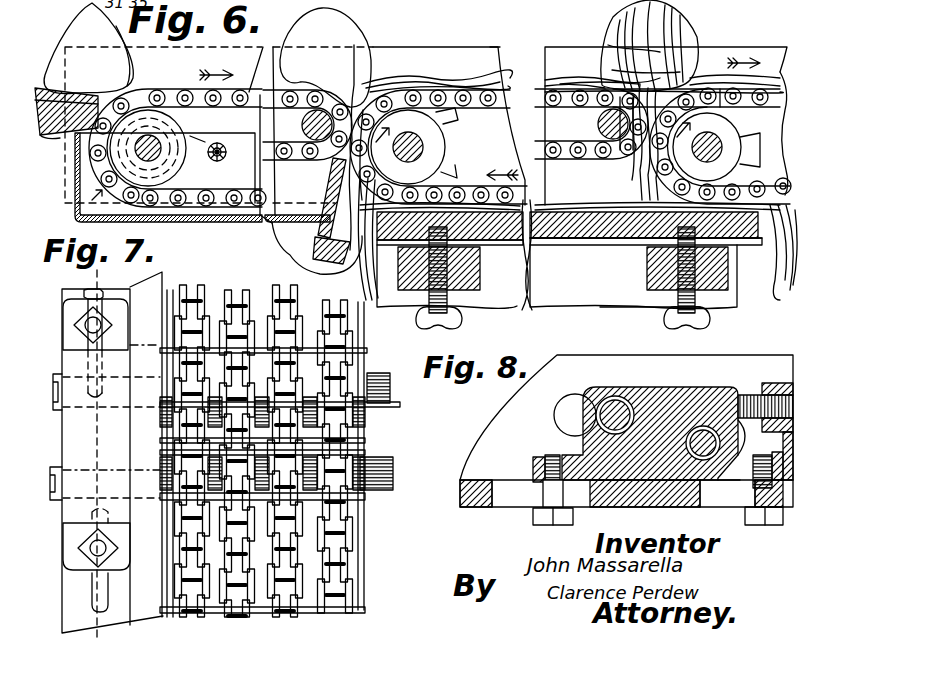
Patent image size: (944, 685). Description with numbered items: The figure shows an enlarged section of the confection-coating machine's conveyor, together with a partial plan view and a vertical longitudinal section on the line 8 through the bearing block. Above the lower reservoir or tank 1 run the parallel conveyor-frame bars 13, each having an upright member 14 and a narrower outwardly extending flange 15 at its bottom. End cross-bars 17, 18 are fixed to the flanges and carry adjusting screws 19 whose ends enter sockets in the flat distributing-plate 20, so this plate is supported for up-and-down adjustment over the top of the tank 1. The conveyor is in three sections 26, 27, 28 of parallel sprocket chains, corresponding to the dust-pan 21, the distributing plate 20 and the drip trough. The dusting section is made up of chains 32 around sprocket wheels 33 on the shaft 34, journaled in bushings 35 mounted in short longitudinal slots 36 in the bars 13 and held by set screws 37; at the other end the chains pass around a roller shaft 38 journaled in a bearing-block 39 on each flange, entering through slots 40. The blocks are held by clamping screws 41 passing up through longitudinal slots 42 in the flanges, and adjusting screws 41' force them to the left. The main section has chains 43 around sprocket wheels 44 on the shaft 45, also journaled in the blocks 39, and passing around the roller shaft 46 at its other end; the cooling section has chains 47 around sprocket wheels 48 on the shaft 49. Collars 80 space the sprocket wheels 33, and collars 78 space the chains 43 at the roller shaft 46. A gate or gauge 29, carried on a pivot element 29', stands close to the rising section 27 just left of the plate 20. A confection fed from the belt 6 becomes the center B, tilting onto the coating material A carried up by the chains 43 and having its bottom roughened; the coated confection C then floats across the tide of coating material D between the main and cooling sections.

In FIG. 6, the lower reservoir or tank 1 is at (562, 300).
In FIG. 6, the conveyor belt 6 is at (72, 92).
In FIG. 7, the section line 8— 8 is at (93, 459).
In FIG. 6, the conveyor-frame bars 13 is at (423, 52).
In FIG. 7, the conveyor-frame bars 13 is at (150, 289).
In FIG. 8, the conveyor-frame bars 13 is at (502, 423).
In FIG. 6, the upright member 14 is at (499, 50).
In FIG. 7, the upright member 14 is at (148, 620).
In FIG. 8, the upright member 14 is at (530, 398).
In FIG. 6, the outwardly extending member or flange 15 is at (585, 245).
In FIG. 7, the outwardly extending member or flange 15 is at (67, 597).
In FIG. 8, the outwardly extending member or flange 15 is at (627, 502).
In FIG. 6, the cross-bar 17 is at (480, 265).
In FIG. 6, the cross-bar 18 is at (646, 277).
In FIG. 6, the adjusting screws 19 is at (453, 317).
In FIG. 6, the flat distributing-plate 20 is at (570, 236).
In FIG. 6, the dust-pan 21 is at (221, 222).
In FIG. 7, the dust-pan 21 is at (163, 580).
In FIG. 6, the first conveyor section 26 is at (170, 88).
In FIG. 7, the first conveyor section 26 is at (345, 582).
In FIG. 6, the second conveyor section 27 is at (396, 88).
In FIG. 7, the second conveyor section 27 is at (327, 320).
In FIG. 6, the third conveyor section 28 is at (776, 108).
In FIG. 6, the gate or gauge 29 is at (325, 172).
In FIG. 7, the gate or gauge 29 is at (239, 443).
In FIG. 6, the pivot element 29' is at (315, 253).
In FIG. 6, the chains 32 is at (205, 177).
In FIG. 7, the chains 32 is at (353, 543).
In FIG. 6, the sprocket wheels 33 is at (160, 149).
In FIG. 6, the shaft 34 is at (148, 148).
In FIG. 6, the bushings 35 is at (215, 128).
In FIG. 6, the longitudinal slots 36 is at (202, 129).
In FIG. 6, the set screws 37 is at (212, 162).
In FIG. 6, the roller shaft 38 is at (337, 96).
In FIG. 7, the roller shaft 38 is at (393, 452).
In FIG. 8, the roller shaft 38 is at (600, 417).
In FIG. 7, the bearing-block 39 is at (115, 441).
In FIG. 8, the bearing-block 39 is at (650, 387).
In FIG. 6, the slots 40 is at (546, 114).
In FIG. 7, the slots 40 is at (145, 345).
In FIG. 8, the slots 40 is at (573, 394).
In FIG. 7, the clamping screws 41 is at (91, 437).
In FIG. 8, the clamping screws 41 is at (643, 492).
In FIG. 8, the adjusting screws 41' is at (765, 422).
In FIG. 7, the longitudinal slots 42 is at (102, 292).
In FIG. 8, the longitudinal slots 42 is at (508, 487).
In FIG. 6, the chains 43 is at (464, 102).
In FIG. 7, the chains 43 is at (347, 333).
In FIG. 6, the sprocket wheels 44 is at (440, 153).
In FIG. 7, the sprocket wheels 44 is at (180, 378).
In FIG. 6, the shaft 45 is at (415, 144).
In FIG. 7, the shaft 45 is at (373, 423).
In FIG. 8, the shaft 45 is at (710, 497).
In FIG. 6, the roller shaft 46 is at (600, 124).
In FIG. 6, the chains 47 is at (740, 102).
In FIG. 6, the sprocket wheels 48 is at (731, 164).
In FIG. 6, the shaft 49 is at (702, 160).
In FIG. 7, the collars 78 is at (168, 383).
In FIG. 7, the collars 80 is at (158, 513).
In FIG. 6, the coating material A is at (513, 176).
In FIG. 6, the confection center B is at (362, 33).
In FIG. 6, the coated confection C is at (678, 16).
In FIG. 6, the tide of coating material D is at (733, 57).